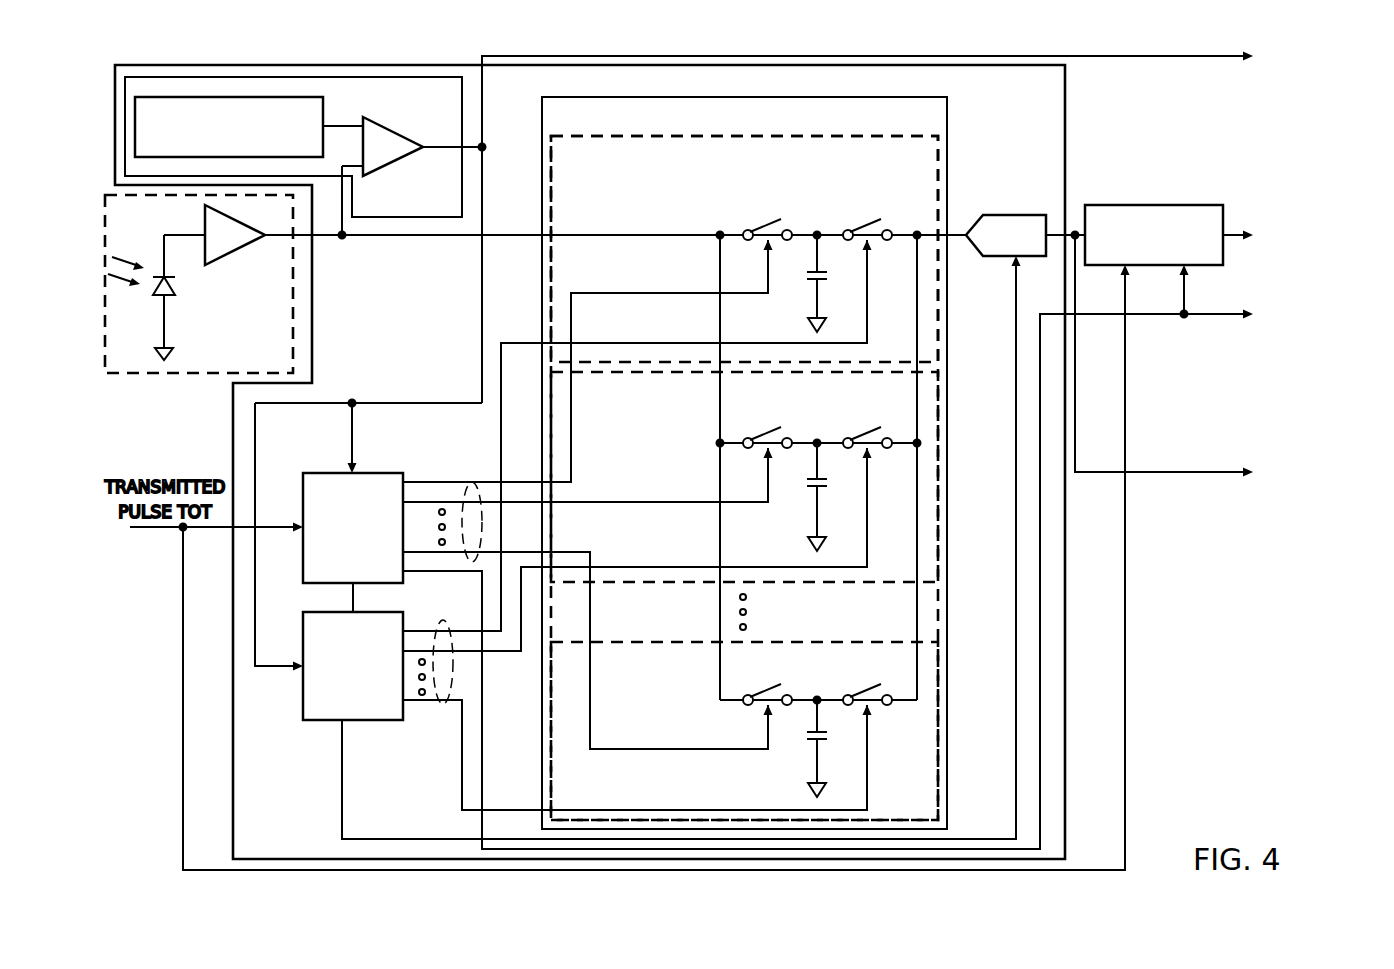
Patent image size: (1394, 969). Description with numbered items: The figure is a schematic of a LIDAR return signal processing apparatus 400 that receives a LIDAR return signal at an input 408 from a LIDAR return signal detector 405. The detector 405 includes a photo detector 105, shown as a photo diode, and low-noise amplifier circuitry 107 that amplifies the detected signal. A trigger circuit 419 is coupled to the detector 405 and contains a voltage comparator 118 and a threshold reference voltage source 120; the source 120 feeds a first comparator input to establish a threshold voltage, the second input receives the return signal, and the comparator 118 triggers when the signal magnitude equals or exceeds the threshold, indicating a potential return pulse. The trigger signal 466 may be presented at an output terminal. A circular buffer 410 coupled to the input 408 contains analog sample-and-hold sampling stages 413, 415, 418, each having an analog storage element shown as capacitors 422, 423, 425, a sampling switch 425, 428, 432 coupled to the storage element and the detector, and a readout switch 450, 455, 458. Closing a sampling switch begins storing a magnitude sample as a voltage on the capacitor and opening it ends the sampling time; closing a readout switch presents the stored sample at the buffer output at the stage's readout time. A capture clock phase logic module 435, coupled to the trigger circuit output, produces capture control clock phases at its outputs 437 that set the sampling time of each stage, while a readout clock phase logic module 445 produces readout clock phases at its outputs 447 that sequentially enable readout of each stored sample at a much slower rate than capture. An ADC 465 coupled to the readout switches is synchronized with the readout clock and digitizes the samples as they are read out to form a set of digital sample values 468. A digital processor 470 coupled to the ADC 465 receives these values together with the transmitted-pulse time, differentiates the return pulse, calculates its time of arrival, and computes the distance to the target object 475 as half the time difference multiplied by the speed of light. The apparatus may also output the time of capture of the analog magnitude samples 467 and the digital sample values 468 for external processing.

The LIDAR return signal processing apparatus 400 is at (1073, 117).
The LIDAR return signal detector 405 is at (133, 381).
The photo detector 105 is at (156, 286).
The low-noise amplifier circuitry 107 is at (239, 251).
The input 408 is at (341, 243).
The threshold reference voltage source 120 is at (326, 105).
The voltage comparator 118 is at (410, 135).
The trigger circuit 419 is at (392, 196).
The trigger signal 466 is at (1322, 75).
The circular buffer 410 is at (958, 148).
The sampling stage 413 is at (612, 211).
The sampling stage 415 is at (622, 459).
The sampling stage 418 is at (637, 736).
The sampling switch 425 is at (760, 222).
The sampling switch 428 is at (760, 432).
The sampling switch 432 is at (760, 689).
The capacitor 422 is at (806, 276).
The capacitor 423 is at (806, 484).
The readout switch 450 is at (860, 222).
The readout switch 455 is at (860, 432).
The readout switch 458 is at (860, 689).
The capture clock phase logic module 435 is at (322, 472).
The outputs of the capture clock phase logic module 437 is at (470, 482).
The readout clock phase logic module 445 is at (322, 721).
The outputs of the readout clock phase logic module 447 is at (443, 706).
The ADC 465 is at (1025, 214).
The digital processor 470 is at (1153, 204).
The distance to the target object 475 is at (1293, 204).
The time of capture of LIDAR analog magnitude samples 467 is at (1292, 353).
The set of digital sample values 468 is at (1292, 527).